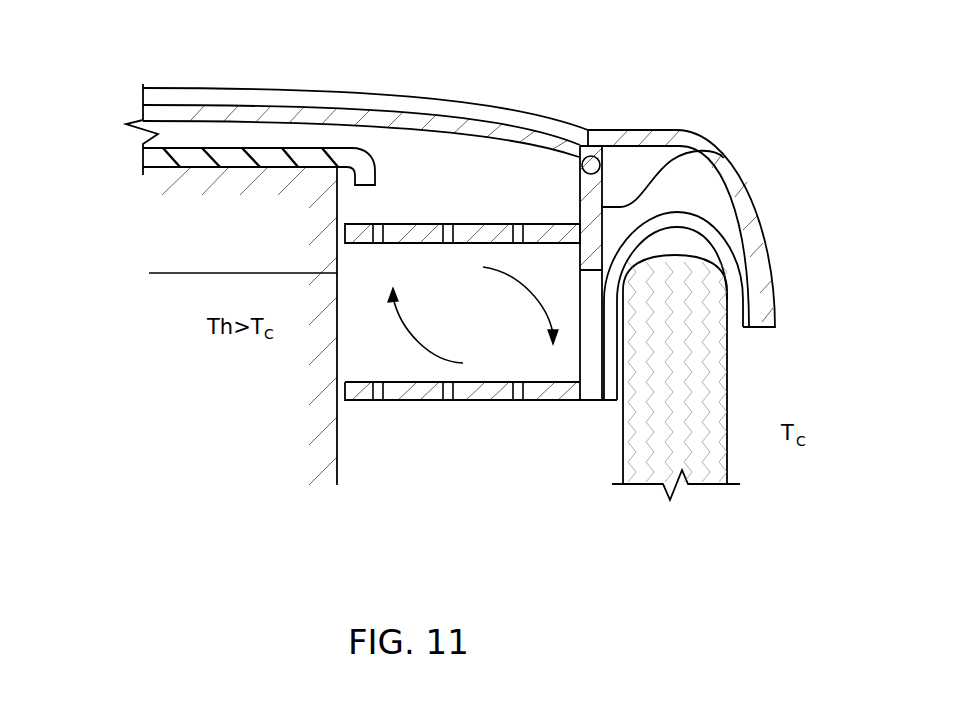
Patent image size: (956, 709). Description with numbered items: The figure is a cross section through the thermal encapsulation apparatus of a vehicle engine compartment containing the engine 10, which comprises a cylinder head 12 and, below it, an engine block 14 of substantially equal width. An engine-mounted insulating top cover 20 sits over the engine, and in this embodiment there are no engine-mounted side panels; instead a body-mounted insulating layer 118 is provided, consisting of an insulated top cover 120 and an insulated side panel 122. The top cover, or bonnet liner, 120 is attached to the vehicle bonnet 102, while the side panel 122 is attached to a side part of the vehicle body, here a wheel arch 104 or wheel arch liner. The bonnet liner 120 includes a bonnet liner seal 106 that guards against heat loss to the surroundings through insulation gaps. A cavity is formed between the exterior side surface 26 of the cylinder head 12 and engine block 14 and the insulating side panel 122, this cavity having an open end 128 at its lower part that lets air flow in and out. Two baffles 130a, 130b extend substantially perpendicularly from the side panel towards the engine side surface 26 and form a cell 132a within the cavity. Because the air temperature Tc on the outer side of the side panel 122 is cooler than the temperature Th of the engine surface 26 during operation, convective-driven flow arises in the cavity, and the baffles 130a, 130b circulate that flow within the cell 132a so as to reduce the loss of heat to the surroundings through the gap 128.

The engine 10 is at (90, 340).
The cylinder head 12 is at (247, 250).
The engine block 14 is at (247, 406).
The top cover 20 is at (188, 147).
The exterior side surface 26 is at (338, 432).
The vehicle bonnet 102 is at (408, 96).
The wheel arch 104 is at (677, 212).
The bonnet liner seal 106 is at (602, 165).
The body-mounted insulating layer 118 is at (559, 88).
The insulated top cover 120 is at (253, 104).
The insulated side panel 122 is at (716, 156).
The open end 128 is at (501, 470).
The baffle 130a is at (378, 223).
The baffle 130b is at (388, 382).
The cell 132a is at (497, 324).